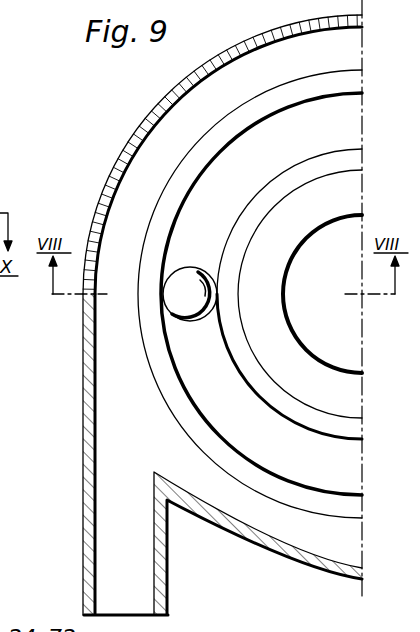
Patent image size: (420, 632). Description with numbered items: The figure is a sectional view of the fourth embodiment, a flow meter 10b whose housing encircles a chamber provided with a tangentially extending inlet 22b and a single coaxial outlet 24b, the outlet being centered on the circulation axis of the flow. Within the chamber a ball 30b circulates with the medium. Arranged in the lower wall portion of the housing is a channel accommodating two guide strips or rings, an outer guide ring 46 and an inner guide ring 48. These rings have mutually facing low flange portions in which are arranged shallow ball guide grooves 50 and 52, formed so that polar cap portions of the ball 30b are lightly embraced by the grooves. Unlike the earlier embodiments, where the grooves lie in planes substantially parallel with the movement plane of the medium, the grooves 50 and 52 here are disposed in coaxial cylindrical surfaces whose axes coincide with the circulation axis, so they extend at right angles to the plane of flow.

The flow meter 10b is at (114, 142).
The tangentially extending inlet 22b is at (117, 553).
The coaxial outlet 24b is at (350, 277).
The ball 30b is at (186, 299).
The outer guide ring 46 is at (274, 489).
The inner guide ring 48 is at (240, 356).
The ball guide groove 50 is at (224, 152).
The ball guide groove 52 is at (240, 215).